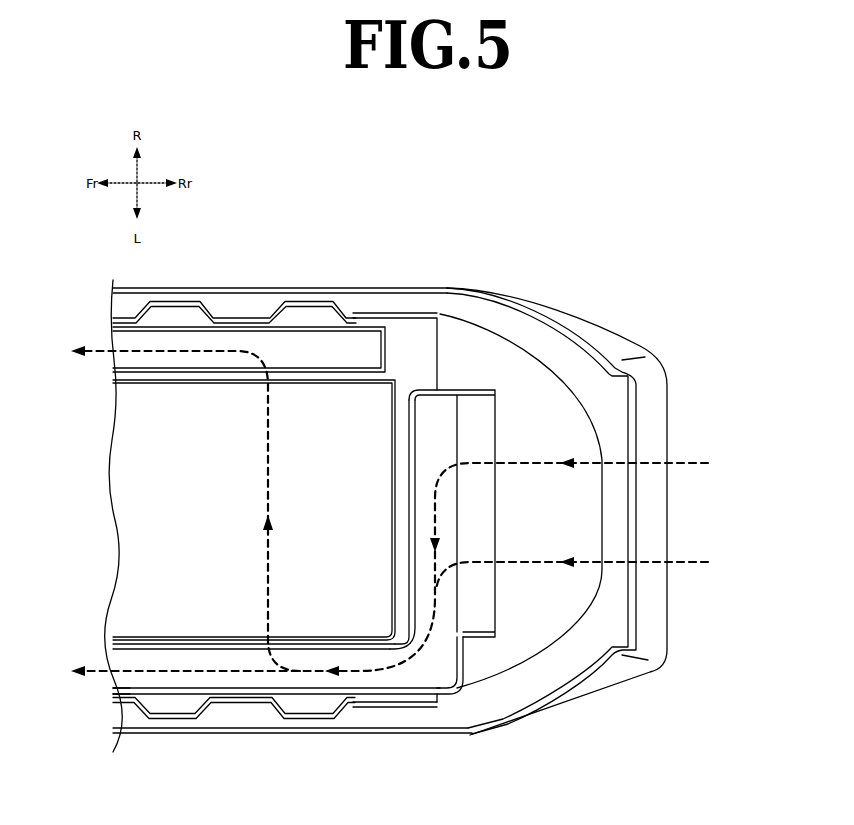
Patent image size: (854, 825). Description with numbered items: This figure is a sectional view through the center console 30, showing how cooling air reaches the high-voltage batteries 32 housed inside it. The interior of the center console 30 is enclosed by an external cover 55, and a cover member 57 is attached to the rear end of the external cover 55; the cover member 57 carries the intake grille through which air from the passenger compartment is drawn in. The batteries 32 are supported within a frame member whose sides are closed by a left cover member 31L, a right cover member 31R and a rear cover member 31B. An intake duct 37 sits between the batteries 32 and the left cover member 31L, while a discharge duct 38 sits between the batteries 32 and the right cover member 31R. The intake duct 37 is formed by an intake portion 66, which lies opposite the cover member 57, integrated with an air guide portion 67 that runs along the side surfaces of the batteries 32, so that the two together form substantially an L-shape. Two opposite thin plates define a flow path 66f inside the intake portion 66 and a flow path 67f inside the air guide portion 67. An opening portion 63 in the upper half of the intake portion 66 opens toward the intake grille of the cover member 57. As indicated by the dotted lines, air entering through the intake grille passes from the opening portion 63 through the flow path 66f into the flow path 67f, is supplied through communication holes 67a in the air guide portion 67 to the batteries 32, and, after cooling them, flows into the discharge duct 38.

The center console 30 is at (440, 258).
The right cover member 31R is at (238, 318).
The left cover member 31L is at (238, 704).
The rear cover member 31B is at (520, 372).
The high-voltage batteries 32 is at (135, 515).
The intake duct 37 is at (115, 693).
The discharge duct 38 is at (118, 360).
The external cover 55 is at (138, 735).
The cover member 57 is at (648, 601).
The opening portion 63 is at (498, 512).
The intake portion 66 is at (467, 657).
The flow path 66f is at (433, 508).
The air guide portion 67 is at (300, 702).
The communication holes 67a is at (138, 640).
The flow path 67f is at (352, 708).